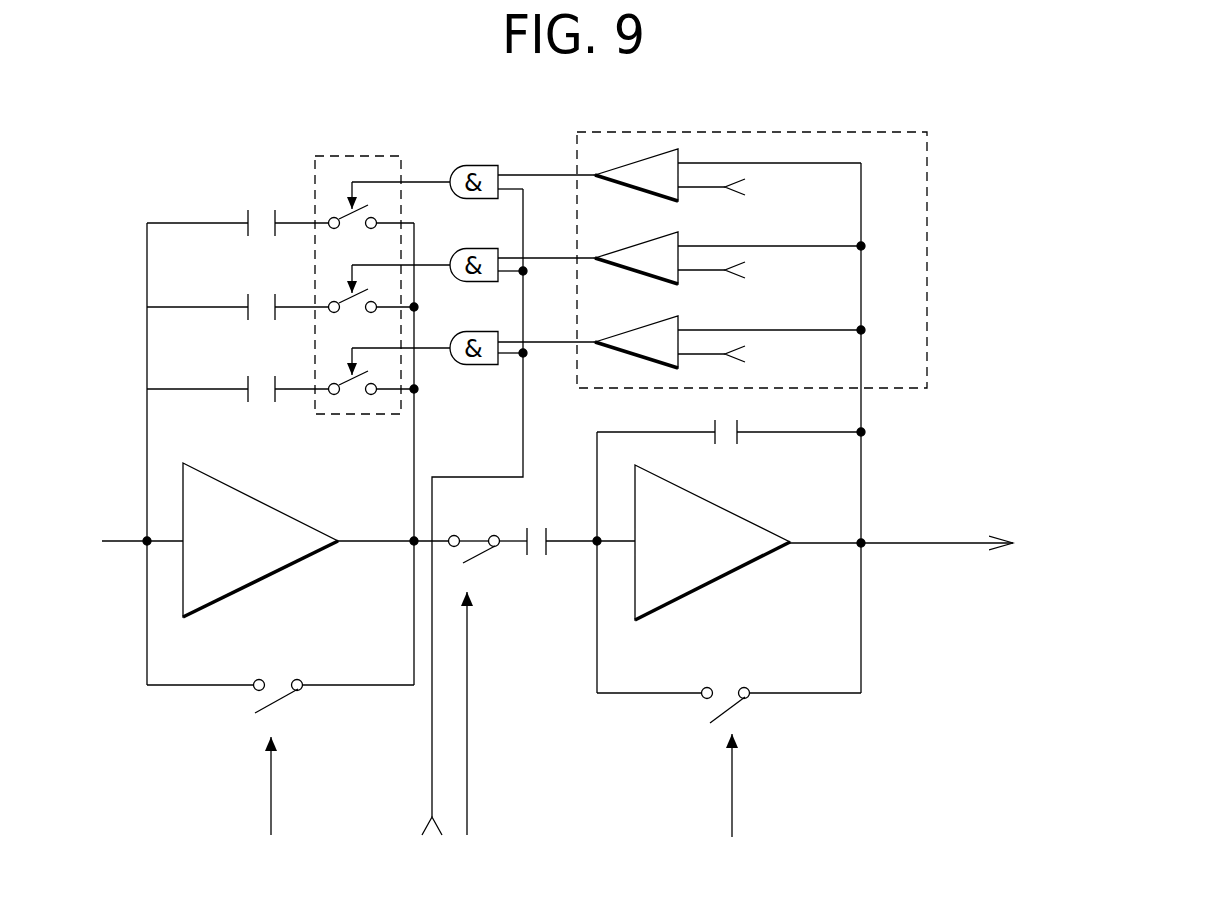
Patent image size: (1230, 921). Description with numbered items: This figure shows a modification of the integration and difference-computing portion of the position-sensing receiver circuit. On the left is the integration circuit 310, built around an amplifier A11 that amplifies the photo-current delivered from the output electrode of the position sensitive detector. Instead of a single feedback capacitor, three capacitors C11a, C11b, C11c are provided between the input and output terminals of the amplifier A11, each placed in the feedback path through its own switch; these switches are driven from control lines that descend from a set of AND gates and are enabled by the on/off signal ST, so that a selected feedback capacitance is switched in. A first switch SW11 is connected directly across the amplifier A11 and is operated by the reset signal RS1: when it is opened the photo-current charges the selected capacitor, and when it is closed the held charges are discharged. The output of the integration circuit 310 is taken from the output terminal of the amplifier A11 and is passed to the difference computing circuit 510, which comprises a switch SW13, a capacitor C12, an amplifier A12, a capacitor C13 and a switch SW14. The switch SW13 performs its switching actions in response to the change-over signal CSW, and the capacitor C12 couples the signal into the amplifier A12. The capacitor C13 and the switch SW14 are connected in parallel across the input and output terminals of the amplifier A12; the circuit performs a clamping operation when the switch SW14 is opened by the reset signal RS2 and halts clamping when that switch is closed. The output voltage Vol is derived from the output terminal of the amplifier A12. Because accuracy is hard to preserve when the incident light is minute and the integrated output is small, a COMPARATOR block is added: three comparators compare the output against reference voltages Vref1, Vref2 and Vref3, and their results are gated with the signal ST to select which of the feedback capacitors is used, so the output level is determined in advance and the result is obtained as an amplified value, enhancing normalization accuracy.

The integration circuit 310 is at (141, 703).
The difference computing circuit 510 is at (887, 732).
The capacitor C11a is at (238, 407).
The capacitor C11b is at (238, 325).
The capacitor C11c is at (238, 241).
The amplifier A11 is at (316, 540).
The first switch SW11 is at (280, 678).
The switch SW13 is at (482, 530).
The capacitor C12 is at (572, 561).
The amplifier A12 is at (712, 542).
The capacitor C13 is at (729, 450).
The switch SW14 is at (729, 687).
The reference voltage Vref1 is at (728, 347).
The reference voltage Vref2 is at (728, 266).
The reference voltage Vref3 is at (728, 183).
The comparator COMPARATOR is at (927, 246).
The reset signal RS1 is at (268, 807).
The reset signal RS2 is at (727, 808).
The on/off signal ST is at (466, 533).
The change-over signal CSW is at (485, 735).
The output voltage Vol is at (927, 544).